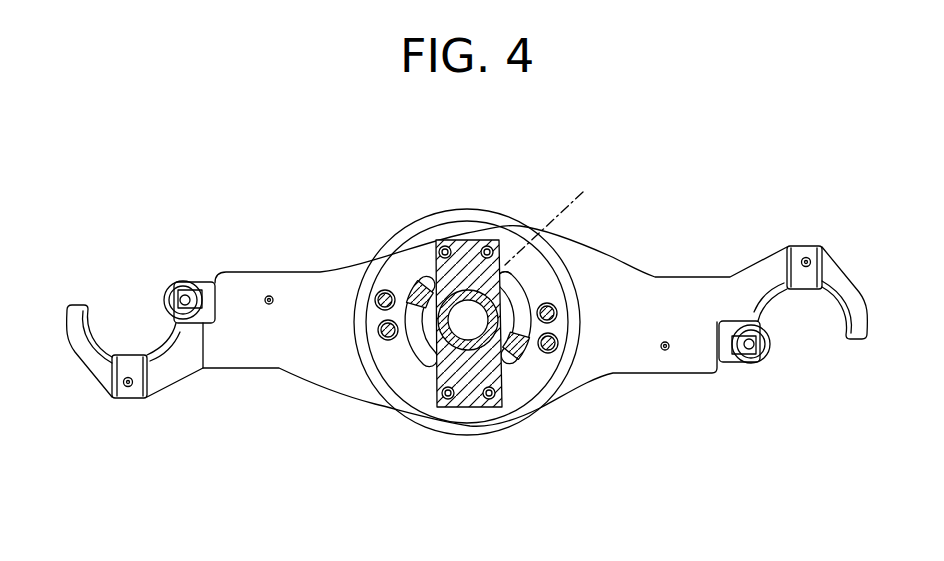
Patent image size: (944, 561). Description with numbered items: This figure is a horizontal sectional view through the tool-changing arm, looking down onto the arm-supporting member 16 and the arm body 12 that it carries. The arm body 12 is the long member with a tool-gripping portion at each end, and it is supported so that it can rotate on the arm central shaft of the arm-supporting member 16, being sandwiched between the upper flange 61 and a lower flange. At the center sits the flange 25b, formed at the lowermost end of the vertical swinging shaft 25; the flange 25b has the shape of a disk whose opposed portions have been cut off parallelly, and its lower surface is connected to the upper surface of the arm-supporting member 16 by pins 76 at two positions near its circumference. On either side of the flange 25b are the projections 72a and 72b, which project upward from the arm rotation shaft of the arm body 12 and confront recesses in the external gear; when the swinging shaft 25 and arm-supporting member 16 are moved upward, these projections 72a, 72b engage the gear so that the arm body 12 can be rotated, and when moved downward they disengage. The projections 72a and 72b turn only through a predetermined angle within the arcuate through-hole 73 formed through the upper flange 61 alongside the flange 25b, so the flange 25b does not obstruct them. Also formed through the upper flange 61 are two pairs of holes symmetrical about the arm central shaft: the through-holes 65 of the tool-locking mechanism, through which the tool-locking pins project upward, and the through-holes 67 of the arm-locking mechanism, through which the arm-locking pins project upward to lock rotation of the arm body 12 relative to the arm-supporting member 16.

The arm body 12 is at (650, 382).
The arm-supporting member 16 is at (505, 206).
The swinging shaft 25 is at (561, 221).
The flange 25b is at (458, 238).
The upper flange 61 is at (505, 223).
The through-holes 65 is at (379, 296).
The through-holes 67 is at (389, 339).
The projection 72a is at (410, 287).
The projection 72b is at (523, 360).
The arcuate through-hole 73 is at (514, 286).
The pins 76 is at (442, 240).